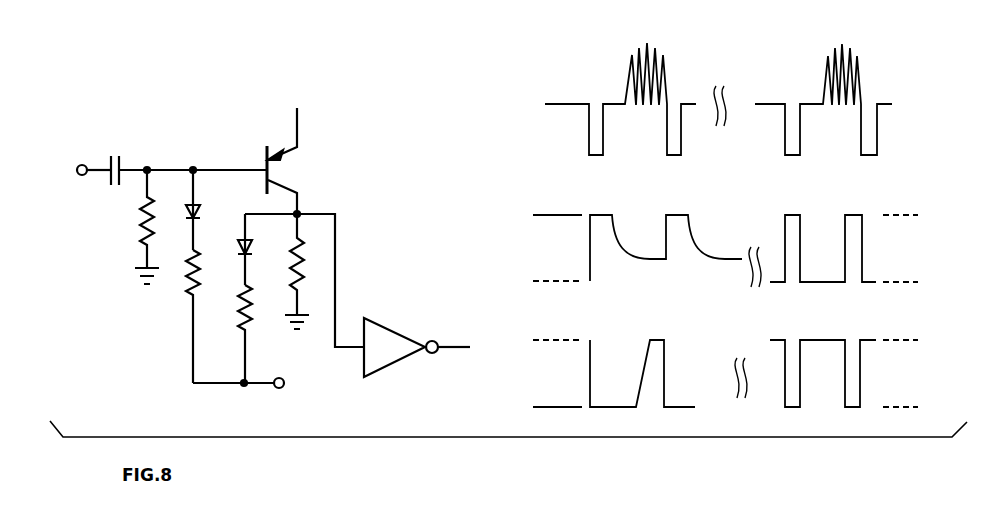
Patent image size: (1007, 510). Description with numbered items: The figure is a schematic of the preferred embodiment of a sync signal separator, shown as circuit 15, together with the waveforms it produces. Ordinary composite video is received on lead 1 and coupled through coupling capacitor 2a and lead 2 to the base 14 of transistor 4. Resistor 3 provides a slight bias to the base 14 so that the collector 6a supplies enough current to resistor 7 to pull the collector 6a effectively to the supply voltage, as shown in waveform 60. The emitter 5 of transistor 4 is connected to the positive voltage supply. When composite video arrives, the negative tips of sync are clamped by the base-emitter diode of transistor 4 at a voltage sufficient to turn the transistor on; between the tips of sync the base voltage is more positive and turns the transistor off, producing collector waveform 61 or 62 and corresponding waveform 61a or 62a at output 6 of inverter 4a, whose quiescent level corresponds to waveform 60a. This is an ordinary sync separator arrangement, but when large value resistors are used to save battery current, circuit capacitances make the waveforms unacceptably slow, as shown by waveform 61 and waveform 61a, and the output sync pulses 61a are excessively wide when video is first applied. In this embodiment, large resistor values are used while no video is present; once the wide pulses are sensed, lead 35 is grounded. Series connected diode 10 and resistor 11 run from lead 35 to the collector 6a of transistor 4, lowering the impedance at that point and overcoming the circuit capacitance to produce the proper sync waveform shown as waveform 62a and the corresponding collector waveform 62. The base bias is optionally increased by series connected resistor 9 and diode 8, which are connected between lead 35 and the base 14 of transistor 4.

The lead 1 is at (88, 164).
The coupling capacitor 2a is at (118, 163).
The lead 2 is at (166, 166).
The resistor 3 is at (143, 212).
The base 14 is at (252, 167).
The transistor 4 is at (273, 157).
The emitter 5 is at (290, 158).
The collector 6a is at (286, 185).
The resistor 7 is at (302, 268).
The diode 8 is at (201, 213).
The resistor 9 is at (197, 278).
The diode 10 is at (251, 252).
The resistor 11 is at (251, 318).
The lead 35 is at (264, 388).
The inverter 4a is at (409, 333).
The output 6 is at (457, 344).
The detector circuit 15 is at (156, 318).
The waveform 60 is at (567, 212).
The waveform 61 is at (688, 215).
The waveform 62 is at (798, 215).
The waveform 60a is at (576, 338).
The waveform 61a is at (657, 340).
The waveform 62a is at (772, 340).